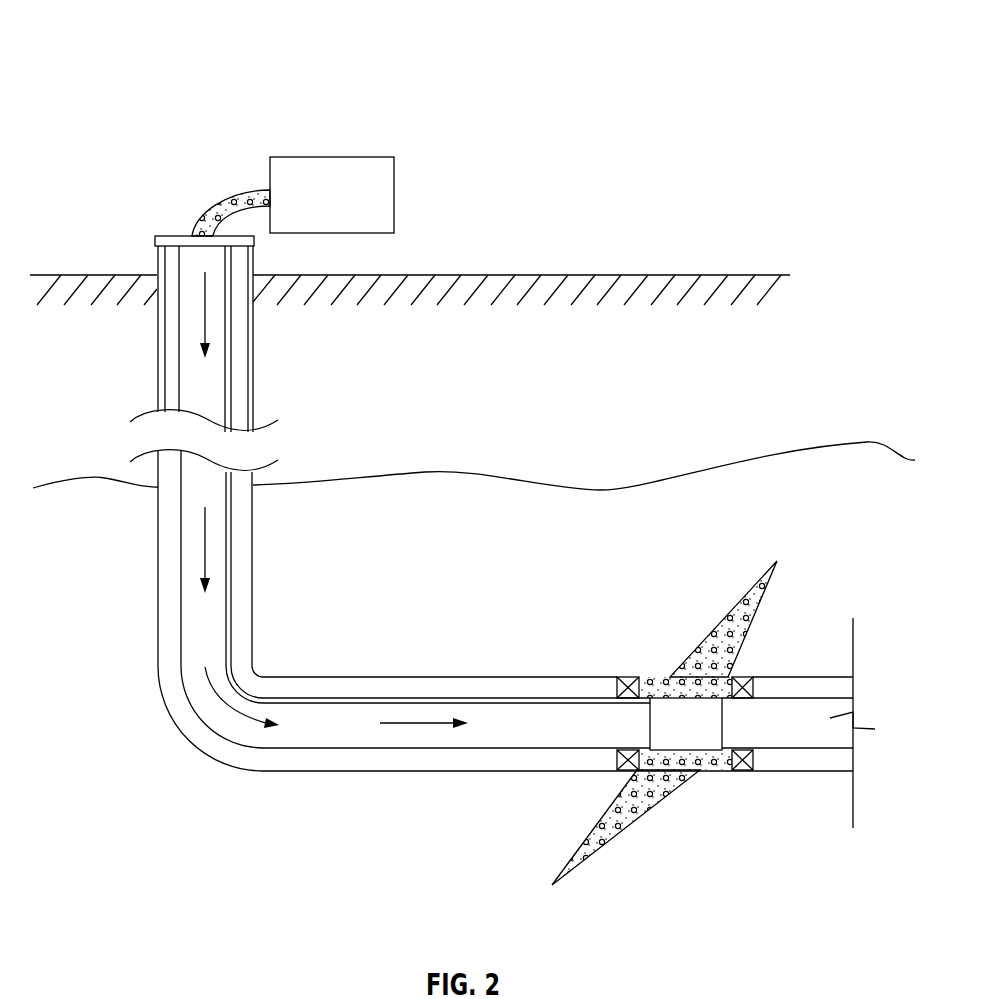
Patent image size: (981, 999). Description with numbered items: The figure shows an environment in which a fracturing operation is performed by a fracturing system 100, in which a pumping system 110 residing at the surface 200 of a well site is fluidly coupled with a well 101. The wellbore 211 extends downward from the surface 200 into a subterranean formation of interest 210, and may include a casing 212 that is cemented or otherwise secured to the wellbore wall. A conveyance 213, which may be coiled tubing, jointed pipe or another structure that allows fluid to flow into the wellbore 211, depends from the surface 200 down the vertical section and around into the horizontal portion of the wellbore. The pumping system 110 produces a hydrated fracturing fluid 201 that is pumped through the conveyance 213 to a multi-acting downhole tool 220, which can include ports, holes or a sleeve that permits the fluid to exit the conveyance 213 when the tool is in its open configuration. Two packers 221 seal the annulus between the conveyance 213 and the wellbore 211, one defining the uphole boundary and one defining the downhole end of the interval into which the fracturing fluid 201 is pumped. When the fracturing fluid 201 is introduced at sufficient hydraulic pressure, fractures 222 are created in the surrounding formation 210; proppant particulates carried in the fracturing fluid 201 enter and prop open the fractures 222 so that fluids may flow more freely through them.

The fracturing system 100 is at (127, 58).
The well 101 is at (180, 228).
The pumping system 110 is at (395, 196).
The surface 200 is at (590, 274).
The fracturing fluid 201 is at (222, 200).
The subterranean formation 210 is at (513, 526).
The wellbore 211 is at (170, 360).
The casing 212 is at (165, 398).
The conveyance 213 is at (178, 588).
The multi-acting downhole tool 220 is at (703, 743).
The packers 221 is at (632, 677).
The fractures 222 is at (695, 608).